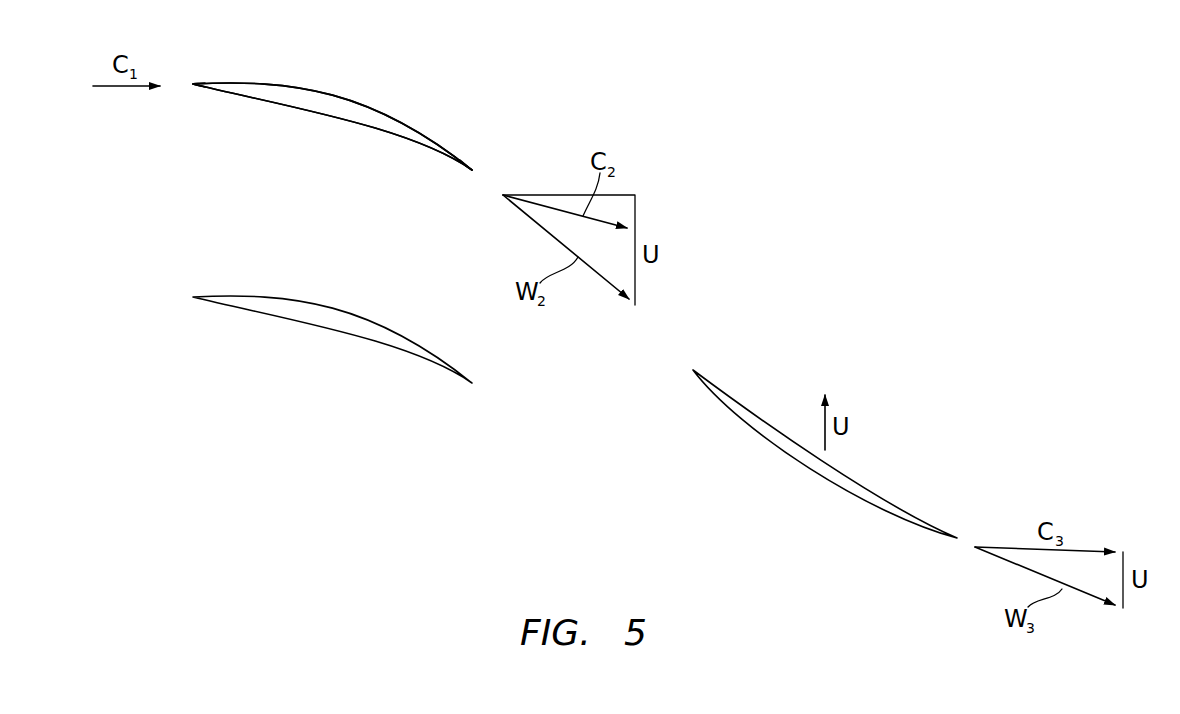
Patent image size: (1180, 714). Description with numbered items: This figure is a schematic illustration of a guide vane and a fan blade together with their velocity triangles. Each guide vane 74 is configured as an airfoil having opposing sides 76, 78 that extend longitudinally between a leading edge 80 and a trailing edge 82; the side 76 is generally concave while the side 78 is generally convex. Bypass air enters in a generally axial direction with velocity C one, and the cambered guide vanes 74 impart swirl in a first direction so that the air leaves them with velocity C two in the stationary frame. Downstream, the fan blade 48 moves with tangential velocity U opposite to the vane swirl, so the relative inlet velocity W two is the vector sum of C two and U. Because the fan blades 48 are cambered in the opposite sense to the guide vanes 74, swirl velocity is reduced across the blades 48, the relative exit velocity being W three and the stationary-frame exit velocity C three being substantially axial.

The guide vane 74 is at (365, 91).
The side 76 is at (280, 104).
The side 78 is at (293, 80).
The leading edge 80 is at (193, 86).
The trailing edge 82 is at (475, 171).
The fan blade 48 is at (802, 488).